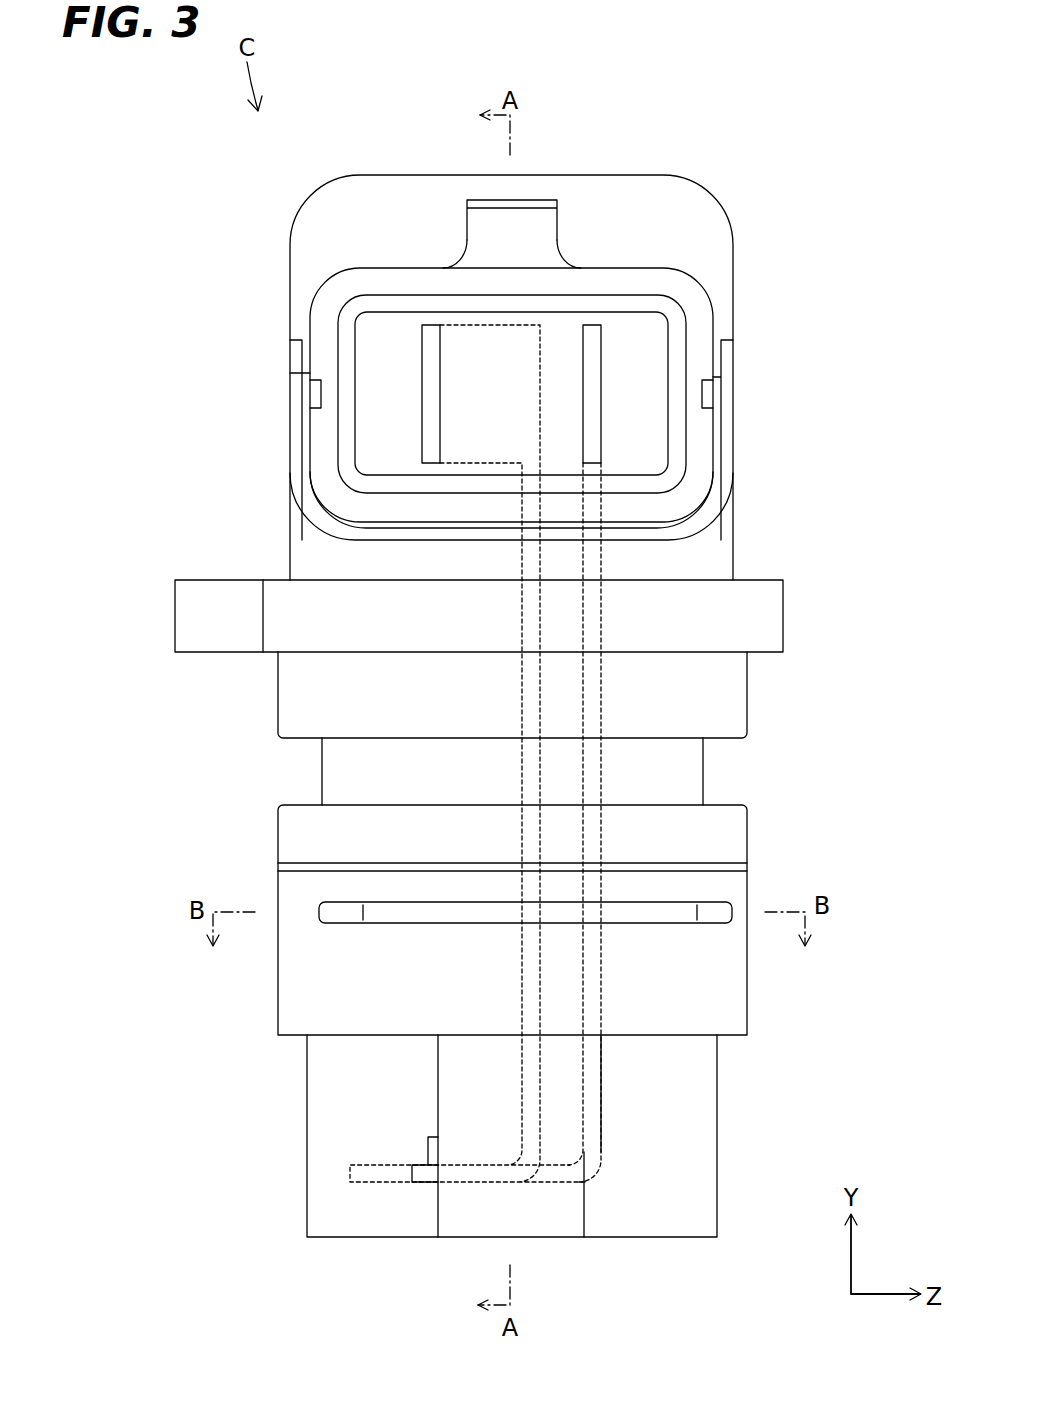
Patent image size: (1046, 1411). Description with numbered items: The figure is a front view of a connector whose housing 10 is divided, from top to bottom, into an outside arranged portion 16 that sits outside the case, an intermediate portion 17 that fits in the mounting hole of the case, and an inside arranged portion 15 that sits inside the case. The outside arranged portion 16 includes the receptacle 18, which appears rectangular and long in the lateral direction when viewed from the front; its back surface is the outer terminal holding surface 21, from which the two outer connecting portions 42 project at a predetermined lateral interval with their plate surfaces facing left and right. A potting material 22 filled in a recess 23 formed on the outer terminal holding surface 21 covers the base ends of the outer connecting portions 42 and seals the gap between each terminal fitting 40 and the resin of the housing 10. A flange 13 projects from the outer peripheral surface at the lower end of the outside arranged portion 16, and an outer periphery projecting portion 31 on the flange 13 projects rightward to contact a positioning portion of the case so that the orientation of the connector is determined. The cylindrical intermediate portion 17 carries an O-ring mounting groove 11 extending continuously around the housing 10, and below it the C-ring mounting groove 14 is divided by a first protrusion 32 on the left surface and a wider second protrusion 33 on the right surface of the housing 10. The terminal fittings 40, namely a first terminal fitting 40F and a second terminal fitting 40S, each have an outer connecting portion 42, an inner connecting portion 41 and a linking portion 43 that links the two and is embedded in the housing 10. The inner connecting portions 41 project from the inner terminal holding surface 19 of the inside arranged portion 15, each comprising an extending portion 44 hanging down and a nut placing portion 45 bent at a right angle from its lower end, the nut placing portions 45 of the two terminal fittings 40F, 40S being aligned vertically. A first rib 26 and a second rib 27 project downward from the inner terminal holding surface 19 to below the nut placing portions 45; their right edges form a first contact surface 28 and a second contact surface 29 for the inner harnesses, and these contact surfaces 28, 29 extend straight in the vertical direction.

The housing 10 is at (700, 220).
The O-ring mounting groove 11 is at (660, 740).
The flange 13 is at (762, 618).
The C-ring mounting groove 14 is at (420, 921).
The inside arranged portion 15 is at (728, 1017).
The outside arranged portion 16 is at (345, 222).
The intermediate portion 17 is at (722, 707).
The receptacle 18 is at (685, 295).
The inner terminal holding surface 19 is at (678, 1037).
The outer terminal holding surface 21 is at (652, 370).
The potting material 22 is at (648, 417).
The recess 23 is at (387, 314).
The first rib 26 is at (670, 1220).
The second rib 27 is at (553, 1220).
The first contact surface 28 is at (305, 1142).
The second contact surface 29 is at (438, 1093).
The outer periphery projecting portion 31 is at (205, 618).
The first protrusion 32 is at (717, 912).
The second protrusion 33 is at (342, 910).
The terminal fitting 40 is at (178, 725).
The first terminal fitting 40F is at (528, 700).
The second terminal fitting 40S is at (592, 770).
The inner connecting portion 41 is at (428, 1173).
The outer connecting portion 42 is at (594, 388).
The linking portion 43 is at (593, 613).
The extending portion 44 is at (597, 1108).
The nut placing portion 45 is at (475, 1173).